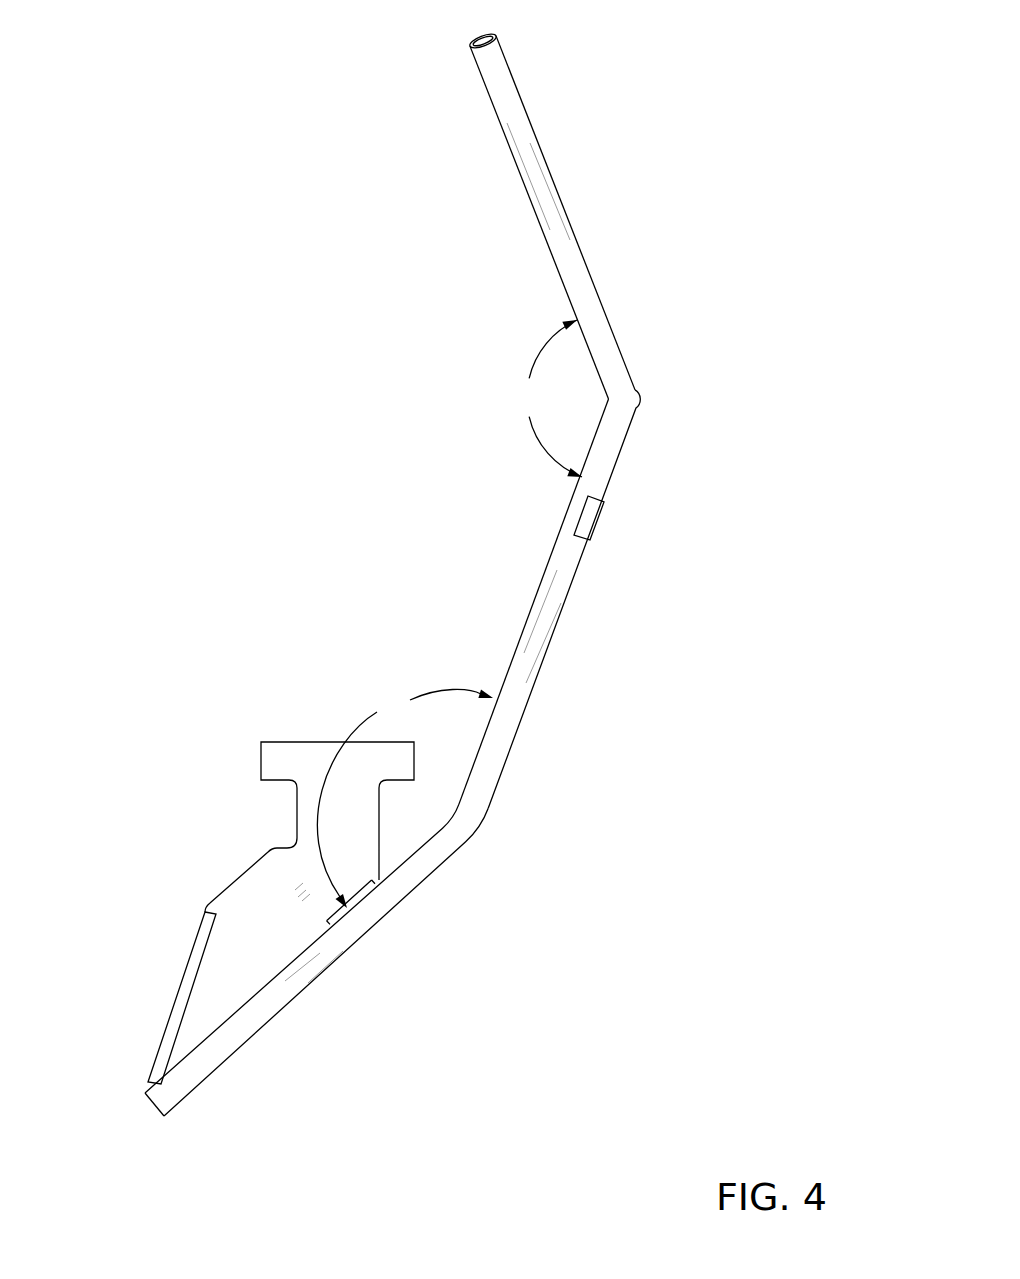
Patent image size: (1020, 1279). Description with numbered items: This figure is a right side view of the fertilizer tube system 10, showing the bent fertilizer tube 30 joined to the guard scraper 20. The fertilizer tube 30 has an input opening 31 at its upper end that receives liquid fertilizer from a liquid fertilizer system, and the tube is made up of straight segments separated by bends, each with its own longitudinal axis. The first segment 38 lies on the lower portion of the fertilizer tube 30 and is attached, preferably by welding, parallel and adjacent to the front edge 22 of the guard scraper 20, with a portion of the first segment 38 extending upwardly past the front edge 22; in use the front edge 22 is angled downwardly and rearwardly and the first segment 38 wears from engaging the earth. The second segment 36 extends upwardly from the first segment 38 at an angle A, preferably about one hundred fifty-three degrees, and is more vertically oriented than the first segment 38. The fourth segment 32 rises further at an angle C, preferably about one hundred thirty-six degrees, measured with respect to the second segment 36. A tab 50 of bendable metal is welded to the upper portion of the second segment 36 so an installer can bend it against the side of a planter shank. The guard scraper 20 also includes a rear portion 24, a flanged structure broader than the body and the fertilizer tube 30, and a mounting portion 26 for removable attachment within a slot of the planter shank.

The fertilizer tube system 10 is at (176, 151).
The guard scraper 20 is at (226, 868).
The front edge 22 is at (253, 1003).
The rear portion 24 is at (169, 1014).
The mounting portion 26 is at (273, 741).
The fertilizer tube 30 is at (491, 655).
The input opening 31 is at (468, 37).
The fourth segment 32 is at (569, 221).
The second segment 36 is at (546, 569).
The first segment 38 is at (374, 929).
The tab 50 is at (601, 522).
The angle A is at (405, 796).
The angle C is at (548, 398).